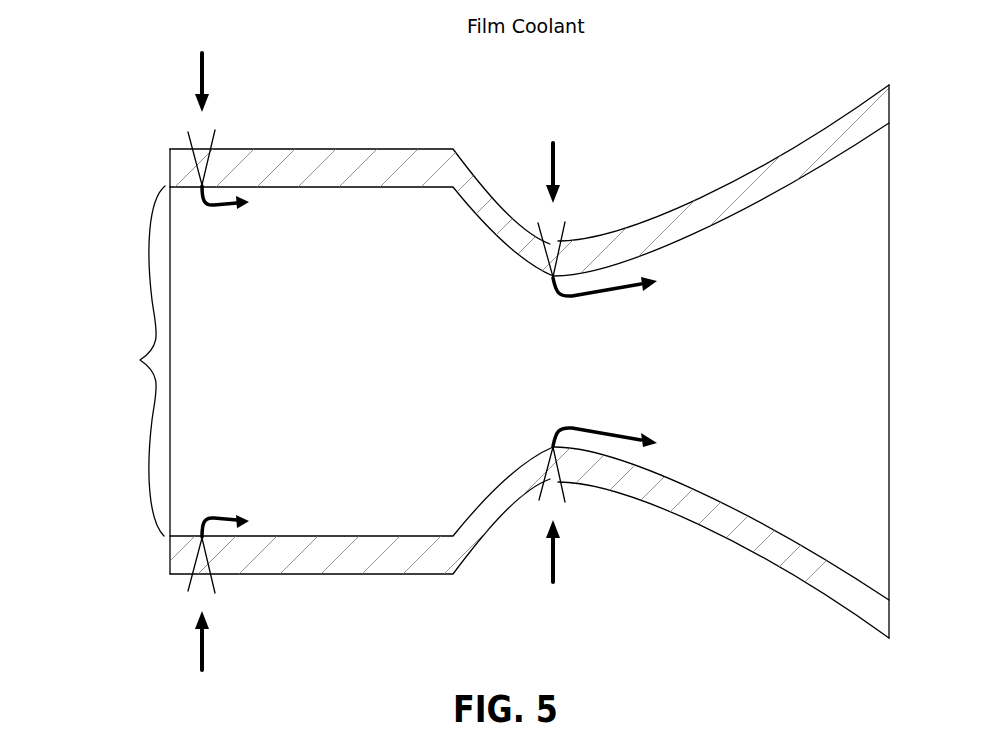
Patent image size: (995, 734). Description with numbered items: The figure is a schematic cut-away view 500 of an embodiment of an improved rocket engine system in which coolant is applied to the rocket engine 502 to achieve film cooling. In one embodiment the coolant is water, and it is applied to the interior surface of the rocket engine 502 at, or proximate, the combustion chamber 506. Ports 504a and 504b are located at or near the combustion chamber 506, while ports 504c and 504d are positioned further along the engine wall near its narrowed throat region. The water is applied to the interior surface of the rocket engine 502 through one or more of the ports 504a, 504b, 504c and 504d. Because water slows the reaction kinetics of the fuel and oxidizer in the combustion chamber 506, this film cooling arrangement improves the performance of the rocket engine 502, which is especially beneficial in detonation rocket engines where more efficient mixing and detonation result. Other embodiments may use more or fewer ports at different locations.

The schematic cut-away view 500 is at (797, 62).
The rocket engine 502 is at (382, 577).
The port 504a is at (197, 141).
The port 504b is at (190, 586).
The port 504c is at (555, 238).
The port 504d is at (555, 483).
The combustion chamber 506 is at (130, 360).